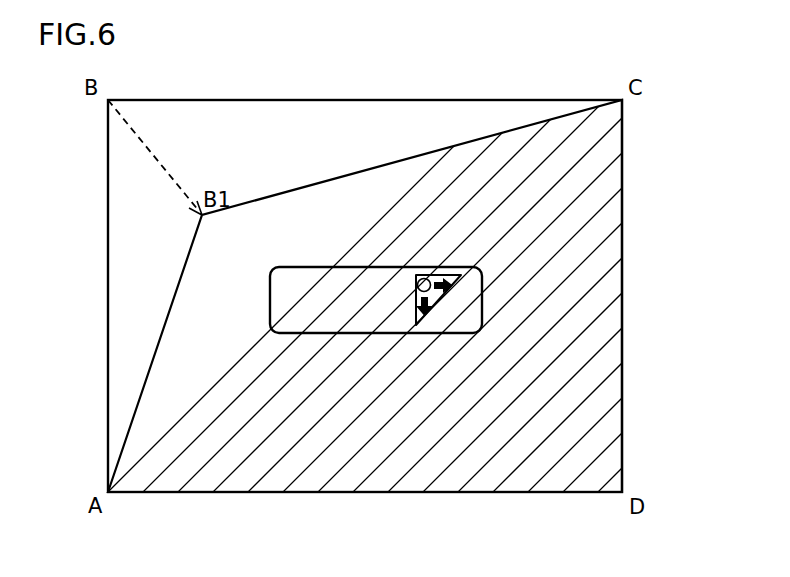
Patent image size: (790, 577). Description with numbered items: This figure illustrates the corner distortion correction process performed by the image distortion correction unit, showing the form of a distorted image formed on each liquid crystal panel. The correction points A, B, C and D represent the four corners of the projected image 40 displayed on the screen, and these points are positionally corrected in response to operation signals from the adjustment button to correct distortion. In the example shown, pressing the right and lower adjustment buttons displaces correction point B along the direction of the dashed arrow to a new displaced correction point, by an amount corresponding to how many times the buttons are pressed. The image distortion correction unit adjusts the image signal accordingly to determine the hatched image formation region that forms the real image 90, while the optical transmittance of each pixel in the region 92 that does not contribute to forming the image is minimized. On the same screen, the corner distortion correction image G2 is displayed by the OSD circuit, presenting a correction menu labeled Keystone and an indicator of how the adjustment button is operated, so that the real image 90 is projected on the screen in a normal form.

The projected image 40 is at (648, 186).
The real image 90 is at (598, 298).
The region that does not contribute to forming the image 92 is at (130, 227).
The corner distortion correction image G2 is at (393, 333).